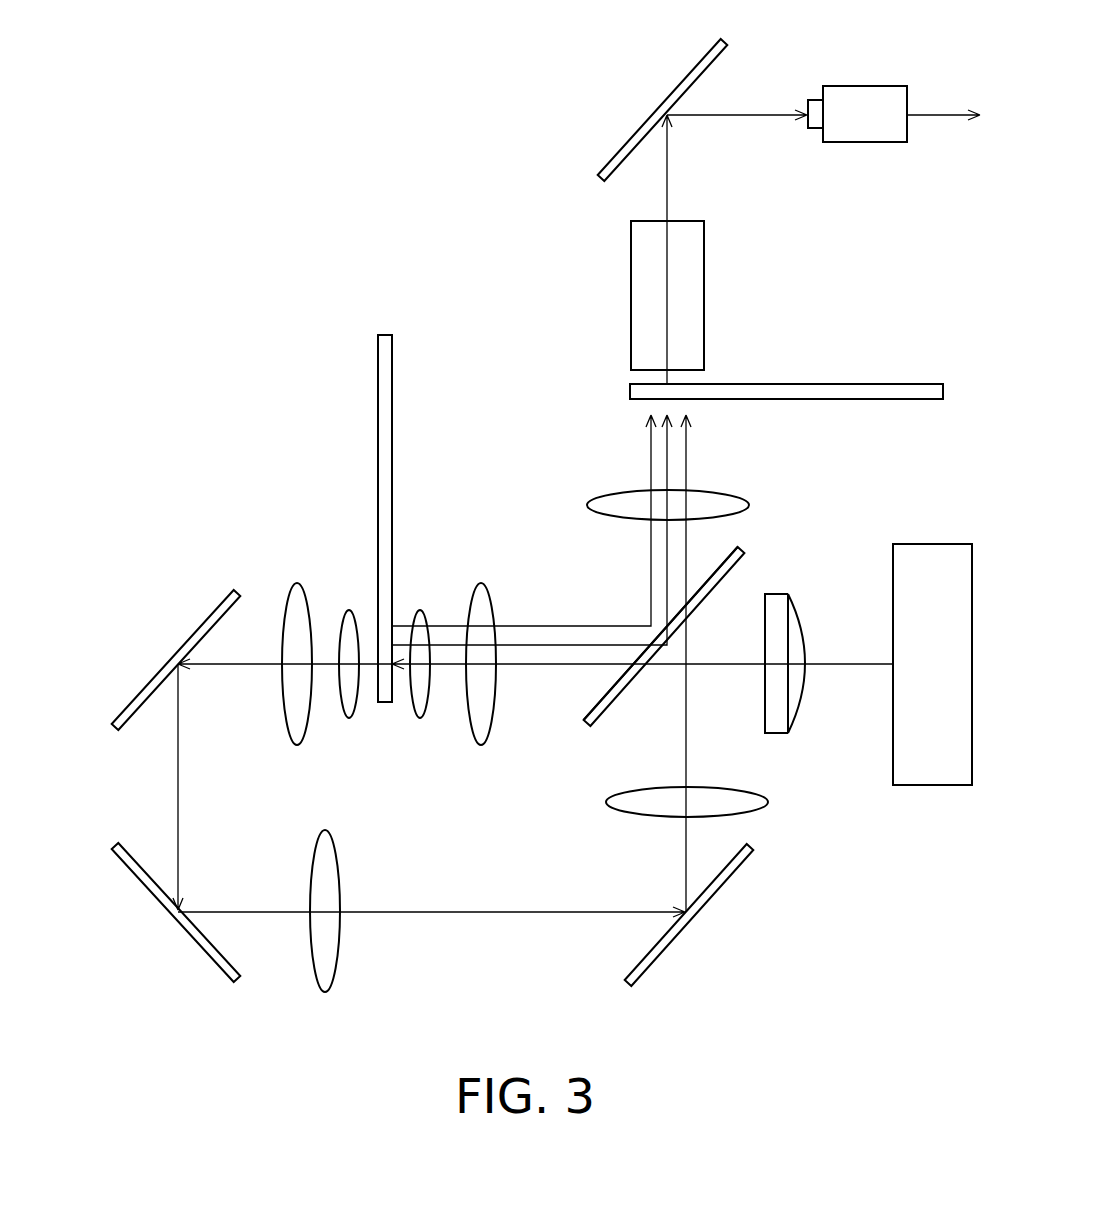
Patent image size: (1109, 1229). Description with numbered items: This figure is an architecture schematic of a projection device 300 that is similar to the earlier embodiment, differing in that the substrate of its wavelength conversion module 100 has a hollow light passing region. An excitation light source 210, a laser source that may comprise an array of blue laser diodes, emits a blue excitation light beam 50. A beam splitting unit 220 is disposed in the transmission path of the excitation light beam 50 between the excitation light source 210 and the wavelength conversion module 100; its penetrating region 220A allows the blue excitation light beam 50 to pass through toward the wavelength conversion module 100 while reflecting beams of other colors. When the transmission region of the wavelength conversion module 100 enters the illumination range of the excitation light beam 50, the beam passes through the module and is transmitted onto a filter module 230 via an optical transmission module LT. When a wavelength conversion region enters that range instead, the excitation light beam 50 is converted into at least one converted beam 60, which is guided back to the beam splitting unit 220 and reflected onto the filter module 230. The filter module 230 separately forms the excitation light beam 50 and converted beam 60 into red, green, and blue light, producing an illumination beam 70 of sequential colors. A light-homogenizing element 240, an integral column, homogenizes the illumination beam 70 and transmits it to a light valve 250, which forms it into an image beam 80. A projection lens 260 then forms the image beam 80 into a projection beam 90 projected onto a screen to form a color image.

The projection device 300 is at (525, 506).
The light valve 250 is at (680, 80).
The projection lens 260 is at (862, 85).
The image beam 80 is at (753, 112).
The projection beam 90 is at (938, 112).
The illumination beam 70 is at (668, 180).
The light-homogenizing element 240 is at (631, 297).
The filter module 230 is at (935, 400).
The converted beam 60 is at (667, 470).
The excitation light beam 50 is at (687, 465).
The beam splitting unit 220 is at (632, 680).
The penetrating region 220A is at (720, 573).
The wavelength conversion module 100 is at (383, 423).
The excitation light source 210 is at (932, 787).
The optical transmission module LT is at (148, 680).